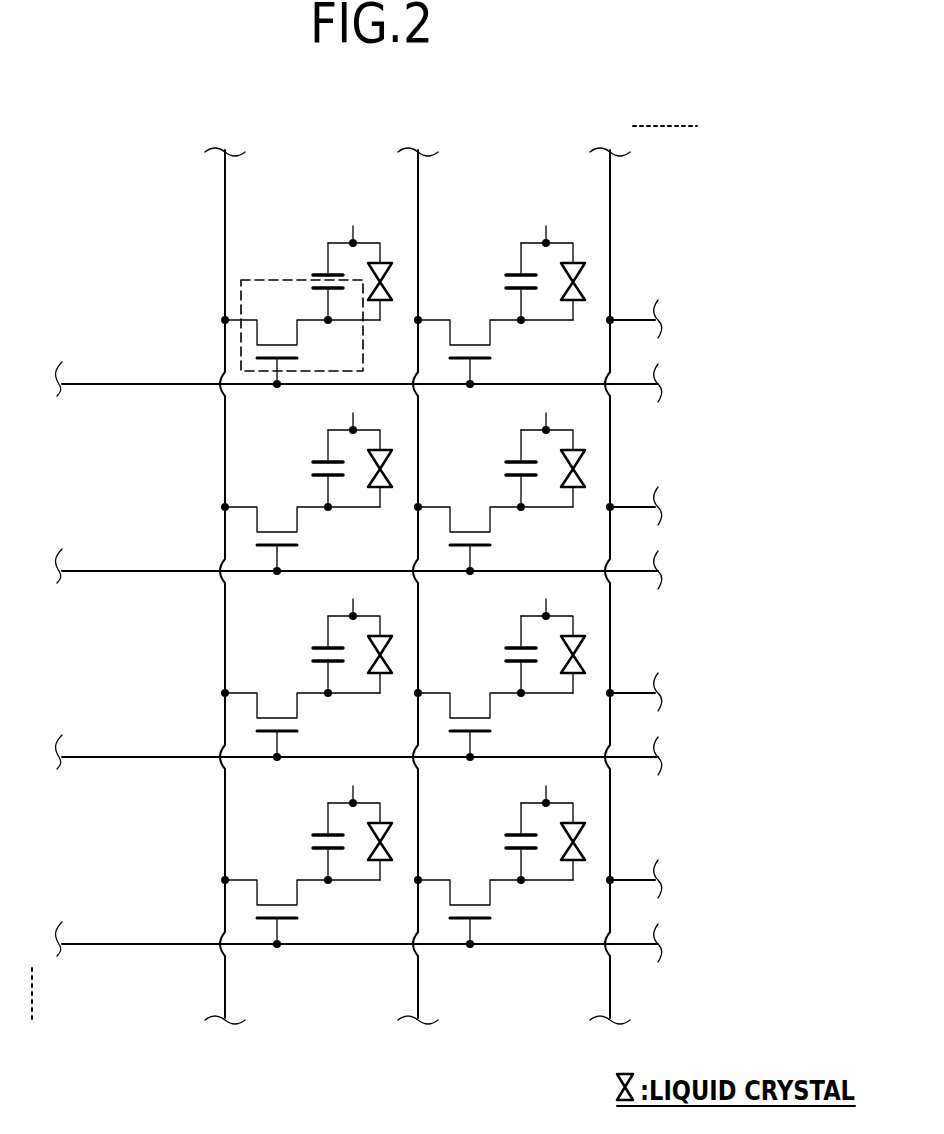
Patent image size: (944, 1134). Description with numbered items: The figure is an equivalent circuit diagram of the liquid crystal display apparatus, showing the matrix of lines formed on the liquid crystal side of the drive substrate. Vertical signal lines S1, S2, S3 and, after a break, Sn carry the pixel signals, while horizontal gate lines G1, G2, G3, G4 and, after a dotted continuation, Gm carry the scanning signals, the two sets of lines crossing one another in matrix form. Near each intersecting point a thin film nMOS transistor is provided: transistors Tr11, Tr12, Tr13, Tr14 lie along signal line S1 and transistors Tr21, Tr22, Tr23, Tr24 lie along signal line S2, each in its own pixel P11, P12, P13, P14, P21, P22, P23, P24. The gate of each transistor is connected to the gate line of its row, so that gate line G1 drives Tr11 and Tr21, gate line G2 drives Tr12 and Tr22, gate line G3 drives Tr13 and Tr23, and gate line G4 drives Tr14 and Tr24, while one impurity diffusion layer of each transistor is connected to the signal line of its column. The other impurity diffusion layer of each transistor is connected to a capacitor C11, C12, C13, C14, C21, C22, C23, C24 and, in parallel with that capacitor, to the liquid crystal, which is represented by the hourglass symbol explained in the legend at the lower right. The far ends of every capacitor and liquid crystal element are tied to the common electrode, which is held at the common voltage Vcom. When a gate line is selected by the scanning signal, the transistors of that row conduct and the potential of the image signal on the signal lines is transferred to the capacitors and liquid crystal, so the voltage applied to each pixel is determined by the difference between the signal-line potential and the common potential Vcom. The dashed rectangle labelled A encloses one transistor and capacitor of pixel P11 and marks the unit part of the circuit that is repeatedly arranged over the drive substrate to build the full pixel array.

The signal line S1 is at (225, 568).
The signal line S2 is at (418, 568).
The signal line S3 is at (626, 568).
The signal line Sn is at (683, 127).
The gate line G1 is at (341, 382).
The gate line G2 is at (341, 569).
The gate line G3 is at (341, 755).
The gate line G4 is at (341, 942).
The gate line Gm is at (40, 1014).
The common voltage Vcom is at (477, 506).
The A part A is at (241, 297).
The pixel P11 is at (299, 233).
The pixel P12 is at (299, 420).
The pixel P13 is at (299, 606).
The pixel P14 is at (299, 793).
The pixel P21 is at (492, 233).
The pixel P22 is at (492, 420).
The pixel P23 is at (492, 606).
The pixel P24 is at (492, 793).
The capacitor C11 is at (307, 283).
The capacitor C12 is at (307, 470).
The capacitor C13 is at (307, 656).
The capacitor C14 is at (307, 843).
The capacitor C21 is at (500, 283).
The capacitor C22 is at (500, 470).
The capacitor C23 is at (500, 656).
The capacitor C24 is at (500, 843).
The nMOS transistor Tr11 is at (300, 352).
The nMOS transistor Tr12 is at (300, 539).
The nMOS transistor Tr13 is at (300, 725).
The nMOS transistor Tr14 is at (300, 912).
The nMOS transistor Tr21 is at (493, 352).
The nMOS transistor Tr22 is at (493, 539).
The nMOS transistor Tr23 is at (493, 725).
The nMOS transistor Tr24 is at (493, 912).